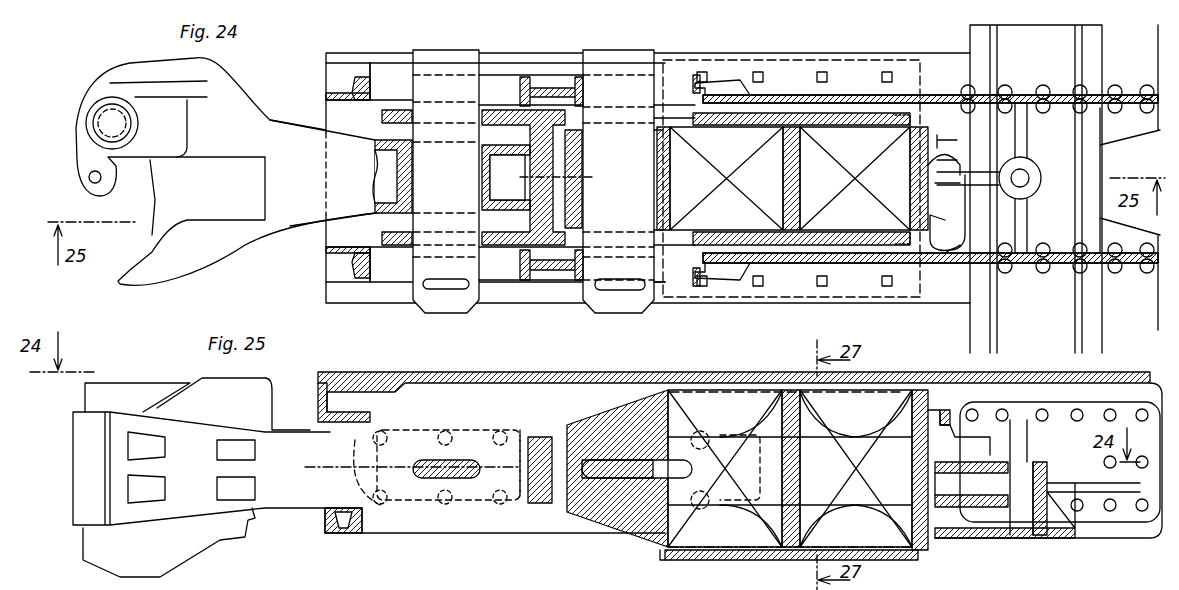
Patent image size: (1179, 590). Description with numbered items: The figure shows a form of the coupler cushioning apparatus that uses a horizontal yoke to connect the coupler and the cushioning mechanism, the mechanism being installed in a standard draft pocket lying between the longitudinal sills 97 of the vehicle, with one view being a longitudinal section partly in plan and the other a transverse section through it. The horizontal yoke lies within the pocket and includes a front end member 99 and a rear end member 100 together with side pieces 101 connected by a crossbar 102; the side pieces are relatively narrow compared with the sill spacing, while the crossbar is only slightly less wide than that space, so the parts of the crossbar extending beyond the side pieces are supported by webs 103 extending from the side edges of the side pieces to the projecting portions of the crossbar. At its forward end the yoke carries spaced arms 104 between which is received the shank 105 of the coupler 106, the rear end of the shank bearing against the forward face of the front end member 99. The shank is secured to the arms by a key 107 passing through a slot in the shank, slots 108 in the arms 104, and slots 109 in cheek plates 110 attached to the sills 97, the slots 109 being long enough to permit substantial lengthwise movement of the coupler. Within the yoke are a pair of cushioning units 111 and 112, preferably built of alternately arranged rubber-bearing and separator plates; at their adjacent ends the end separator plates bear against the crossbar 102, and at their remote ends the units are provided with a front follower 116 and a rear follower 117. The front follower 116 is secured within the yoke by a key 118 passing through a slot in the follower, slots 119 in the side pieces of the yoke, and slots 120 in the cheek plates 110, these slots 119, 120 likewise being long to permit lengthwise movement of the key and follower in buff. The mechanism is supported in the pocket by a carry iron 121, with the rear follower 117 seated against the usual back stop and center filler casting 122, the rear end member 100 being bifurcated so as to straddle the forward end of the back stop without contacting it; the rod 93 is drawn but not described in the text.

In FIG. 24, the guide rod 93 is at (716, 107).
In FIG. 24, the longitudinal sills 97 is at (532, 60).
In FIG. 25, the longitudinal sills 97 is at (410, 535).
In FIG. 24, the front end member 99 is at (542, 220).
In FIG. 25, the front end member 99 is at (540, 503).
In FIG. 24, the rear end member 100 is at (955, 230).
In FIG. 25, the rear end member 100 is at (950, 528).
In FIG. 24, the side pieces 101 is at (876, 118).
In FIG. 25, the side pieces 101 is at (740, 445).
In FIG. 24, the crossbar 102 is at (797, 176).
In FIG. 25, the crossbar 102 is at (800, 468).
In FIG. 25, the webs 103 is at (808, 420).
In FIG. 24, the spaced arms 104 is at (382, 117).
In FIG. 24, the shank 105 is at (348, 188).
In FIG. 25, the shank 105 is at (315, 495).
In FIG. 24, the coupler 106 is at (238, 128).
In FIG. 25, the coupler 106 is at (240, 503).
In FIG. 24, the key 107 is at (455, 42).
In FIG. 25, the key 107 is at (470, 478).
In FIG. 24, the slots 108 is at (482, 130).
In FIG. 24, the slots 109 is at (385, 78).
In FIG. 25, the slots 109 is at (537, 443).
In FIG. 24, the cheek plates 110 is at (365, 75).
In FIG. 25, the cheek plates 110 is at (507, 463).
In FIG. 24, the cushioning unit 111 is at (728, 240).
In FIG. 25, the cushioning unit 111 is at (694, 402).
In FIG. 24, the cushioning unit 112 is at (887, 210).
In FIG. 25, the cushioning unit 112 is at (905, 405).
In FIG. 24, the front follower 116 is at (663, 172).
In FIG. 25, the front follower 116 is at (655, 400).
In FIG. 24, the rear follower 117 is at (950, 163).
In FIG. 25, the rear follower 117 is at (928, 403).
In FIG. 24, the key 118 is at (612, 303).
In FIG. 25, the key 118 is at (602, 478).
In FIG. 24, the slots 119 is at (681, 112).
In FIG. 25, the slots 119 is at (682, 460).
In FIG. 24, the slots 120 is at (676, 78).
In FIG. 24, the carry iron 121 is at (787, 285).
In FIG. 25, the carry iron 121 is at (915, 562).
In FIG. 24, the back stop and center filler casting 122 is at (931, 177).
In FIG. 25, the back stop and center filler casting 122 is at (985, 538).